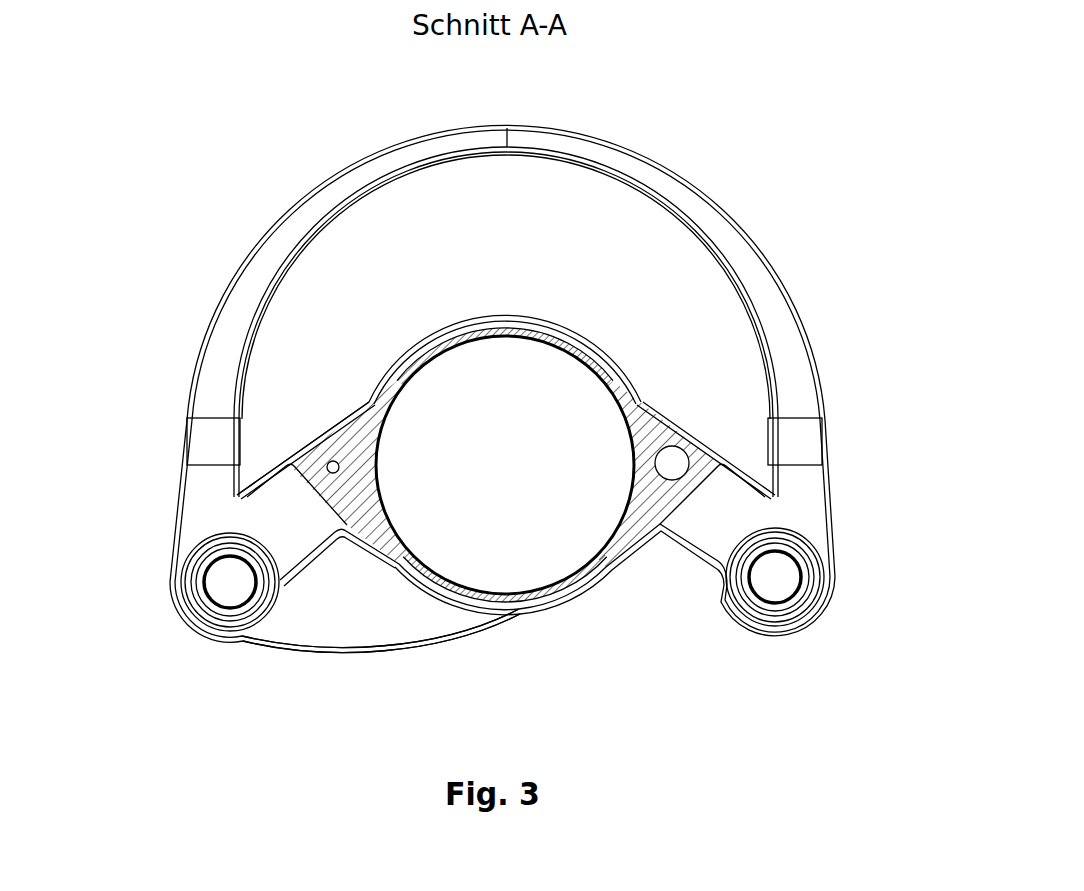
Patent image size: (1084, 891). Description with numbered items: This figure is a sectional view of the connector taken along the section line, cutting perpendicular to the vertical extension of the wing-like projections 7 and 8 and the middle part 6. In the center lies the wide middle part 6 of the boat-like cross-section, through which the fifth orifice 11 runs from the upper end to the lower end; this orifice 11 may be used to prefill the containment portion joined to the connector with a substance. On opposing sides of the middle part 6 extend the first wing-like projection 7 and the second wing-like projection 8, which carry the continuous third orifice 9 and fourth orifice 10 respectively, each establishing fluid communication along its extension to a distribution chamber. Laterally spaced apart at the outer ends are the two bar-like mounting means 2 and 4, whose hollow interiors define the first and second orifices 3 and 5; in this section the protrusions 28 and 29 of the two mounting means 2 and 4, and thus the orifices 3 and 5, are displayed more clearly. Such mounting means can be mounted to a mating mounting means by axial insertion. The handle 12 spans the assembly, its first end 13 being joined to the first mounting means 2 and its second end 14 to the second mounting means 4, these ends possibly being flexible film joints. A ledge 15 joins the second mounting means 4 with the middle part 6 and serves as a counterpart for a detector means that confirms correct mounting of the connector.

The first mounting means 2 is at (778, 620).
The first orifice 3 is at (778, 580).
The second mounting means 4 is at (225, 628).
The second orifice 5 is at (228, 583).
The middle part 6 is at (500, 323).
The first wing-like projection 7 is at (653, 500).
The second wing-like projection 8 is at (352, 432).
The third orifice 9 is at (674, 458).
The fourth orifice 10 is at (331, 463).
The fifth orifice 11 is at (563, 388).
The handle 12 is at (642, 168).
The first end 13 is at (798, 430).
The second end 14 is at (205, 440).
The ledge 15 is at (392, 615).
The protrusion 28 is at (727, 520).
The protrusion 29 is at (283, 512).